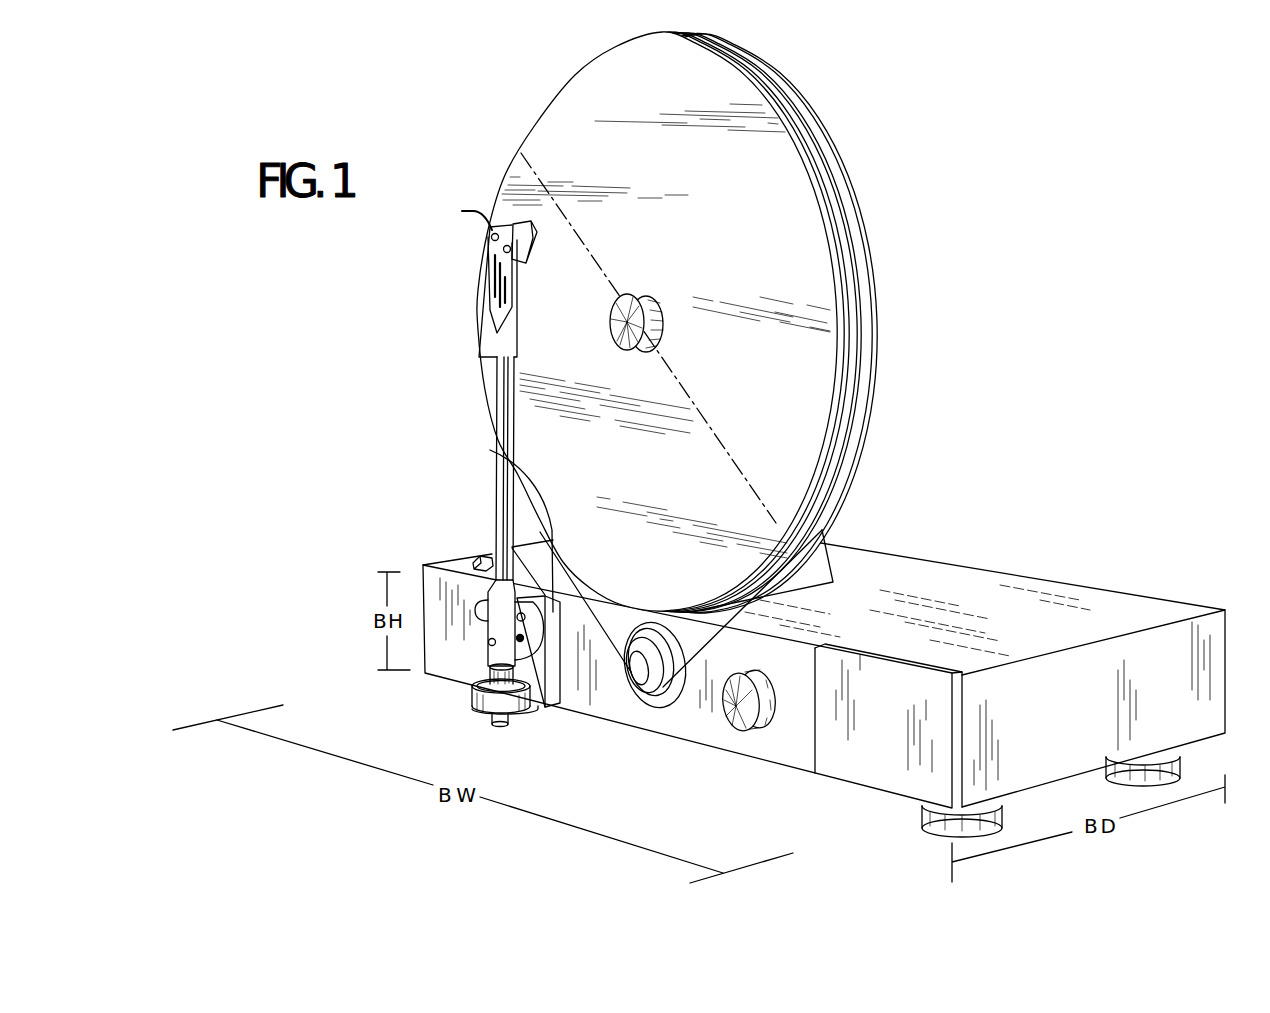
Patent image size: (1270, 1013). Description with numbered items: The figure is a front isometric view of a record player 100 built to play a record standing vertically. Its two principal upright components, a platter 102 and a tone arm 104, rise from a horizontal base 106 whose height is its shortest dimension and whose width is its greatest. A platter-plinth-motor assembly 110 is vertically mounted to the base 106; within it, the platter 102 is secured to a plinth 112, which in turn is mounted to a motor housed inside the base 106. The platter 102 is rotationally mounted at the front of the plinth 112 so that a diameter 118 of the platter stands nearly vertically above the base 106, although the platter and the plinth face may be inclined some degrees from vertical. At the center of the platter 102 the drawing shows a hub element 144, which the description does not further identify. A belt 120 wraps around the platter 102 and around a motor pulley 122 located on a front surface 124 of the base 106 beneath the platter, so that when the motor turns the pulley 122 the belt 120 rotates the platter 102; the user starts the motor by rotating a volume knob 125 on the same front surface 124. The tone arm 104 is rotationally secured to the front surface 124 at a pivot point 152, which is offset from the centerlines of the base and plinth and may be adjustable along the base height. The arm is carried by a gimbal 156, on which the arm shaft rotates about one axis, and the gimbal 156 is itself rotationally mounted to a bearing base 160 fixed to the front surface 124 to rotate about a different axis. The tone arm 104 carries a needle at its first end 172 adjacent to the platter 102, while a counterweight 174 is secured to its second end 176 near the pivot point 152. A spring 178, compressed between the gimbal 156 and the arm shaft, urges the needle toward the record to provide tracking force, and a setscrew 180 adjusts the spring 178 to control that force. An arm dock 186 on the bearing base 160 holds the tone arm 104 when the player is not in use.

The record player 100 is at (953, 155).
The platter 102 is at (657, 321).
The tone arm 104 is at (503, 497).
The base 106 is at (1107, 597).
The platter-plinth-motor assembly 110 is at (880, 480).
The plinth 112 is at (817, 567).
The diameter 118 is at (521, 153).
The belt 120 is at (733, 613).
The motor pulley 122 is at (632, 680).
The front surface 124 is at (790, 750).
The volume knob 125 is at (730, 708).
The spindle 144 is at (657, 324).
The pivot point 152 is at (547, 703).
The gimbal 156 is at (423, 565).
The bearing base 160 is at (490, 450).
The first end 172 is at (488, 247).
The counterweight 174 is at (476, 708).
The second end 176 is at (500, 727).
The spring 178 is at (482, 703).
The setscrew 180 is at (519, 641).
The arm dock 186 is at (482, 554).